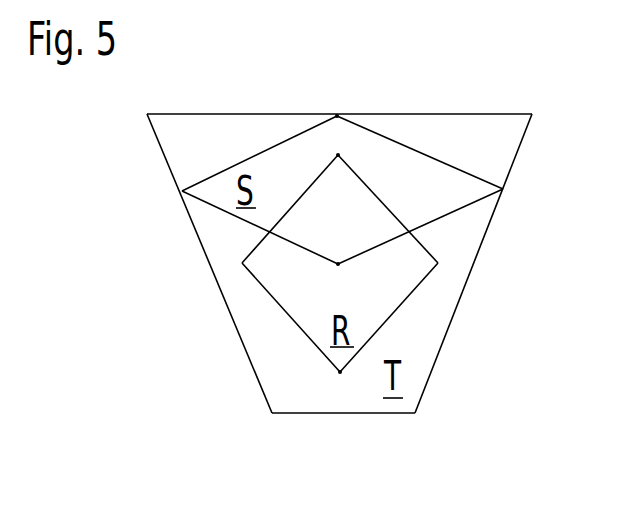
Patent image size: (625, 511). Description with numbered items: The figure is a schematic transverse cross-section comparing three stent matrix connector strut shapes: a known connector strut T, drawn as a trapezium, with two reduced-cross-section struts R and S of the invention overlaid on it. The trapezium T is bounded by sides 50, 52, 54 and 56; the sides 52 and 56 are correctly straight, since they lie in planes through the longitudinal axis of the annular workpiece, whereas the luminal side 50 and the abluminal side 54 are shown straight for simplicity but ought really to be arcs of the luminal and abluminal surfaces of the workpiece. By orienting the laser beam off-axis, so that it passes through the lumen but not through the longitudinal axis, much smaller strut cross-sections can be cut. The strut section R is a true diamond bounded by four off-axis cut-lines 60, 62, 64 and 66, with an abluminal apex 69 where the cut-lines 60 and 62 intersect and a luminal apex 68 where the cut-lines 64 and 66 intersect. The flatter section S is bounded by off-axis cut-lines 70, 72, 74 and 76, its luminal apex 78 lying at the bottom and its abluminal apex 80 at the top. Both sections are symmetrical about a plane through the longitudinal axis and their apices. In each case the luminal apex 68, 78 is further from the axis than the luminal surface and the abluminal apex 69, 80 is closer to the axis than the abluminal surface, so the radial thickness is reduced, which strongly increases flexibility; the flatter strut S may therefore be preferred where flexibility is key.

The side of trapezium 50 is at (380, 413).
The side of trapezium 52 is at (459, 300).
The side of trapezium 54 is at (237, 114).
The side of trapezium 56 is at (229, 313).
The cut-line 60 is at (281, 217).
The cut-line 62 is at (396, 216).
The cut-line 64 is at (393, 317).
The cut-line 66 is at (300, 330).
The luminal apex 68 is at (340, 372).
The abluminal apex 69 is at (338, 155).
The cut-line 70 is at (466, 168).
The cut-line 72 is at (443, 218).
The cut-line 74 is at (245, 222).
The cut-line 76 is at (222, 172).
The luminal apex 78 is at (337, 263).
The abluminal apex 80 is at (340, 116).